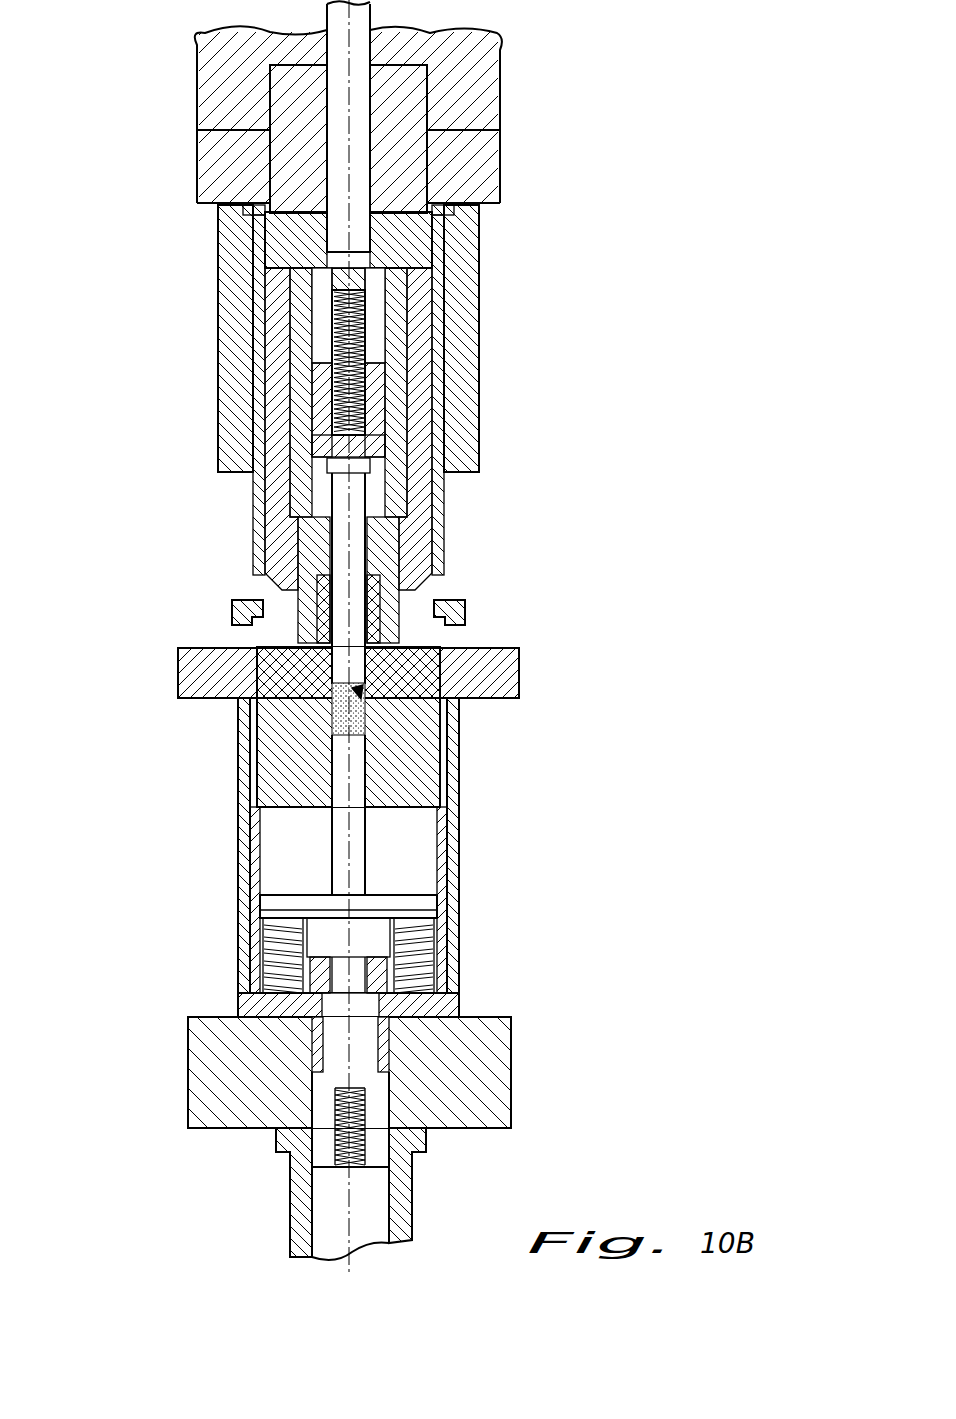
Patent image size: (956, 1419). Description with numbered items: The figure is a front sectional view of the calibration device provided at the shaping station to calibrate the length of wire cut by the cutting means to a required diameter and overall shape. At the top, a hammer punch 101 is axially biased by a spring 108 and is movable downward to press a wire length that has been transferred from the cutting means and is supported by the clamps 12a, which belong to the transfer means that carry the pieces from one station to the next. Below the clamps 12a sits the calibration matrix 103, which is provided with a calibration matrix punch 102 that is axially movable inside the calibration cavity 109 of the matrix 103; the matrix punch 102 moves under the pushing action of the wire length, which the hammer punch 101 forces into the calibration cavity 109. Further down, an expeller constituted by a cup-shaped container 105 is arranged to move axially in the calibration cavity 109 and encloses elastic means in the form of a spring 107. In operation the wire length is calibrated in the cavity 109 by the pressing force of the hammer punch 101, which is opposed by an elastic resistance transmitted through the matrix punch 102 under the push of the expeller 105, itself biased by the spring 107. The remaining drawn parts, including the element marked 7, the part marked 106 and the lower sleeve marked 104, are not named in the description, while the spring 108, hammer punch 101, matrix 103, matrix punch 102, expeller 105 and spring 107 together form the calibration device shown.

The spring 108 is at (362, 356).
The hammer punch 101 is at (353, 505).
The clamps 12a is at (460, 600).
The calibration cavity 109 is at (362, 707).
The workpiece material 7 is at (332, 712).
The calibration matrix 103 is at (418, 774).
The calibration matrix punch 102 is at (352, 825).
The return spring 106 is at (428, 935).
The cup-shaped container 105 is at (345, 1040).
The spring 107 is at (360, 1137).
The lower sleeve 104 is at (345, 1205).